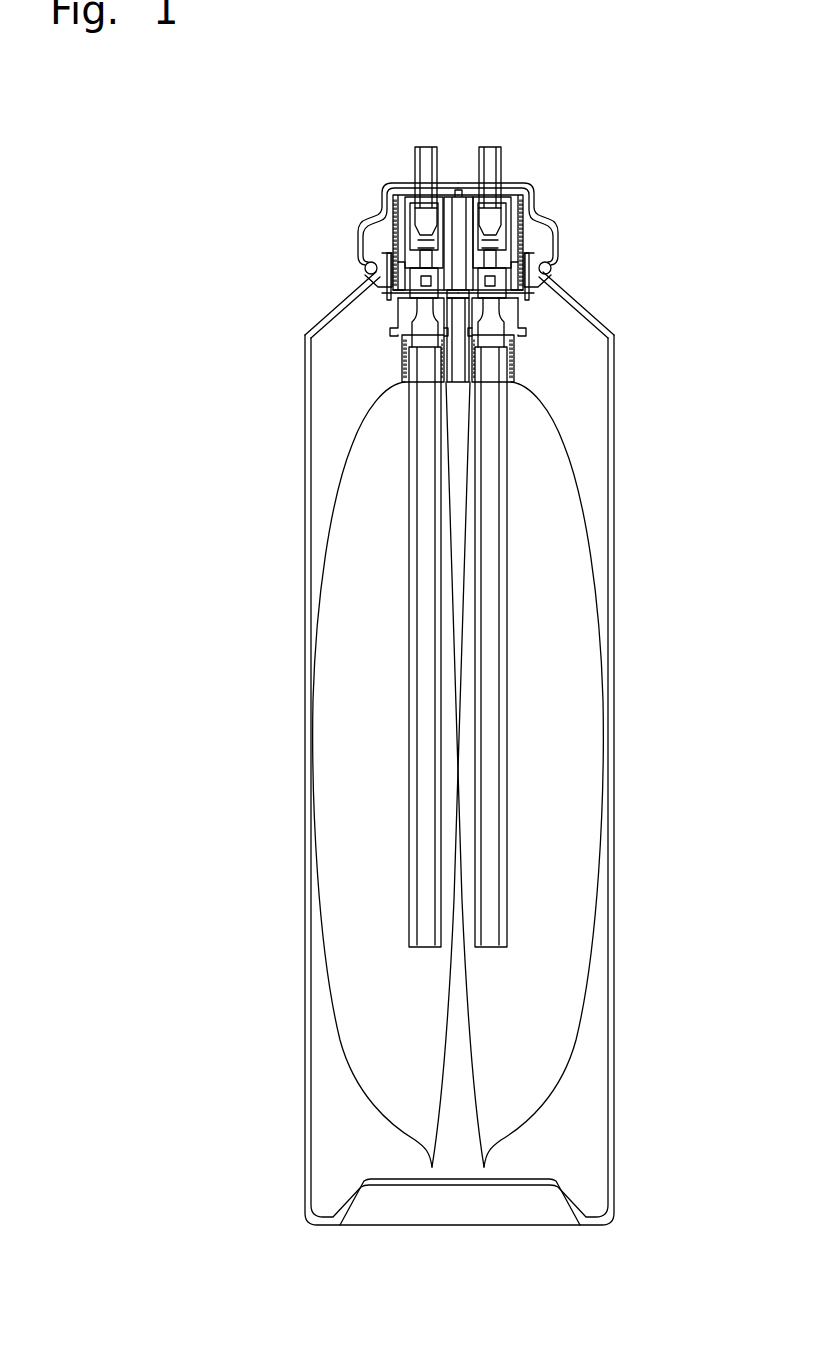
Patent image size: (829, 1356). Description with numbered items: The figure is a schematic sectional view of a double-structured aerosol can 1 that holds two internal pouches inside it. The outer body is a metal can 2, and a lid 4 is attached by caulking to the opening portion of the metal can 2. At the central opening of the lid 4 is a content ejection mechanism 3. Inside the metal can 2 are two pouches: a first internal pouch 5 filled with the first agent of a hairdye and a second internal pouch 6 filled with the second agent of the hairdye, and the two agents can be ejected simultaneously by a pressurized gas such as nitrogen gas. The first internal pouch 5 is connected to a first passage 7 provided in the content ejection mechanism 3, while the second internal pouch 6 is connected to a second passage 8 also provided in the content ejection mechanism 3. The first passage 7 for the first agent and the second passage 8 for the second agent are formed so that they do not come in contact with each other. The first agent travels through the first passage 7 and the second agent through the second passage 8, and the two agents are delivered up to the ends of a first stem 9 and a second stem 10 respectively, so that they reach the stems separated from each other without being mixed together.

The double-structured aerosol can 1 is at (305, 311).
The metal can 2 is at (608, 487).
The content ejection mechanism 3 is at (514, 245).
The lid 4 is at (532, 185).
The first internal pouch 5 is at (335, 773).
The second internal pouch 6 is at (580, 800).
The first passage 7 is at (412, 325).
The second passage 8 is at (488, 322).
The first stem 9 is at (434, 143).
The second stem 10 is at (490, 143).